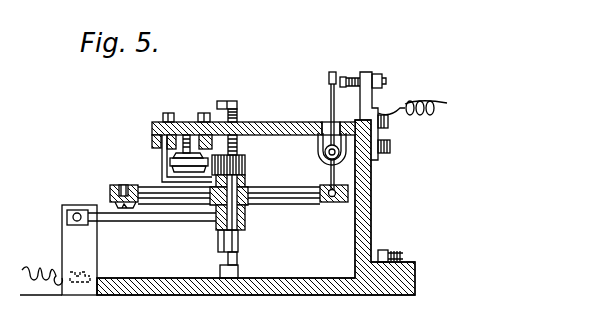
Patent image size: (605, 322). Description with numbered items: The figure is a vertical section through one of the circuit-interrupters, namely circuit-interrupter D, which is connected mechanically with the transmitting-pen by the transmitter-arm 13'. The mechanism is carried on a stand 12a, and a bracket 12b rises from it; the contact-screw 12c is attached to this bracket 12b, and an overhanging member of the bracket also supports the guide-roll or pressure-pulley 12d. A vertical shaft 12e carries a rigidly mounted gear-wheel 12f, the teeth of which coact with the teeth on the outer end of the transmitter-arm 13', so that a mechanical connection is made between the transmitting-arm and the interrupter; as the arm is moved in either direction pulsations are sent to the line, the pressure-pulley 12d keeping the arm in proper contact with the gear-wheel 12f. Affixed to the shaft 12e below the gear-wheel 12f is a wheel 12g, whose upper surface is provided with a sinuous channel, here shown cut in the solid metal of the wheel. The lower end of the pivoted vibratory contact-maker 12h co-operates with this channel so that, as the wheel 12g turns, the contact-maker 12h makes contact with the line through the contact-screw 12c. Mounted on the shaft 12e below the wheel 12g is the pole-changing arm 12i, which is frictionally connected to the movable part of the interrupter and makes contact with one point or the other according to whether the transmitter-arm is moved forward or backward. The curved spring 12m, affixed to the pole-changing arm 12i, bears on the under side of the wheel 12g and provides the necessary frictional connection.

The circuit-interrupter D is at (226, 93).
The stand 12a is at (286, 254).
The bracket 12b is at (371, 213).
The contact-screw 12c is at (362, 76).
The guide-roll or pressure-pulley 12d is at (182, 163).
The vertical shaft 12e is at (216, 228).
The gear-wheel 12f is at (245, 168).
The wheel 12g is at (324, 204).
The pivoted vibratory contact-maker 12h is at (331, 96).
The pole-changing arm 12i is at (120, 222).
The curved spring 12m is at (118, 206).
The transmitter-arm 13' is at (225, 153).